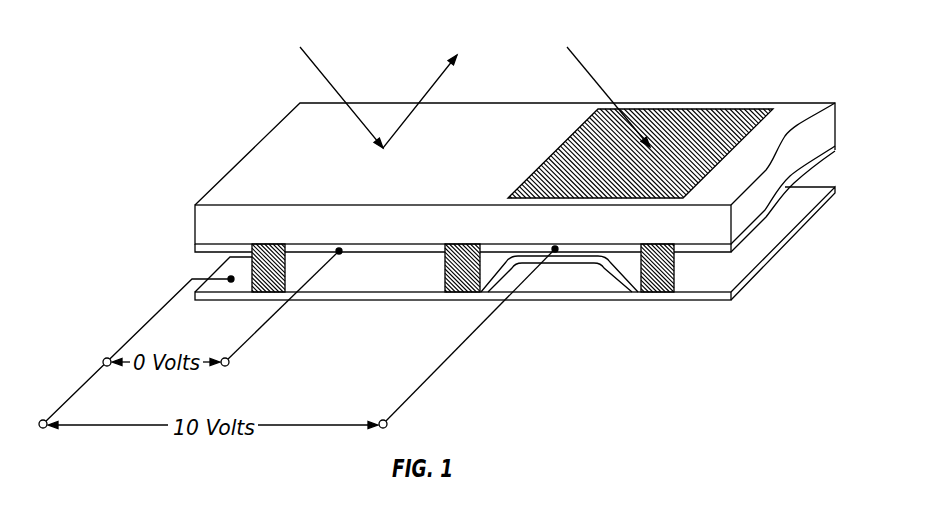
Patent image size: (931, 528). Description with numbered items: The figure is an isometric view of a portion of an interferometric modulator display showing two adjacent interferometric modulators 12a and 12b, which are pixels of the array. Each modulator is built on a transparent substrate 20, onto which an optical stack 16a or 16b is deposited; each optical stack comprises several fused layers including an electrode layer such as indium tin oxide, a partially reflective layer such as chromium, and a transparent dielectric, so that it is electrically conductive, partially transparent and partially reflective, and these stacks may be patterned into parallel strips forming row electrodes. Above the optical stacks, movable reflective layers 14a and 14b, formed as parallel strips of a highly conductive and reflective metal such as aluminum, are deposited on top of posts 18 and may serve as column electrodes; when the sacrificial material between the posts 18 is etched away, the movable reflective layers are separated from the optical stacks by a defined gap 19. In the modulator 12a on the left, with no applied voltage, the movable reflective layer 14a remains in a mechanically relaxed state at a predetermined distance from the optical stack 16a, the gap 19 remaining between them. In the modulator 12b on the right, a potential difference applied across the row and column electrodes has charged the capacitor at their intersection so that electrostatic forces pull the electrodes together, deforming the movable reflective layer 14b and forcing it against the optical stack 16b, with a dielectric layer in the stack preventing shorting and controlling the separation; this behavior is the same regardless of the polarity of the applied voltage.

The interferometric modulator 12a is at (295, 165).
The interferometric modulator 12b is at (697, 132).
The movable reflective layer 14a is at (302, 296).
The movable reflective layer 14b is at (505, 277).
The optical stack 16a is at (360, 258).
The optical stack 16b is at (534, 252).
The posts 18 is at (268, 285).
The gap 19 is at (402, 273).
The transparent substrate 20 is at (770, 168).